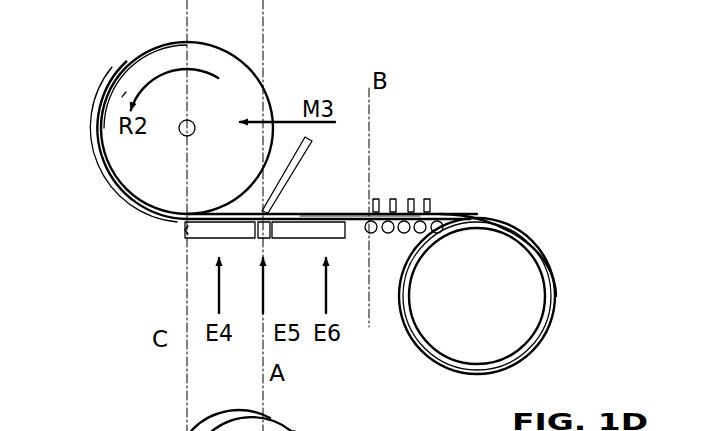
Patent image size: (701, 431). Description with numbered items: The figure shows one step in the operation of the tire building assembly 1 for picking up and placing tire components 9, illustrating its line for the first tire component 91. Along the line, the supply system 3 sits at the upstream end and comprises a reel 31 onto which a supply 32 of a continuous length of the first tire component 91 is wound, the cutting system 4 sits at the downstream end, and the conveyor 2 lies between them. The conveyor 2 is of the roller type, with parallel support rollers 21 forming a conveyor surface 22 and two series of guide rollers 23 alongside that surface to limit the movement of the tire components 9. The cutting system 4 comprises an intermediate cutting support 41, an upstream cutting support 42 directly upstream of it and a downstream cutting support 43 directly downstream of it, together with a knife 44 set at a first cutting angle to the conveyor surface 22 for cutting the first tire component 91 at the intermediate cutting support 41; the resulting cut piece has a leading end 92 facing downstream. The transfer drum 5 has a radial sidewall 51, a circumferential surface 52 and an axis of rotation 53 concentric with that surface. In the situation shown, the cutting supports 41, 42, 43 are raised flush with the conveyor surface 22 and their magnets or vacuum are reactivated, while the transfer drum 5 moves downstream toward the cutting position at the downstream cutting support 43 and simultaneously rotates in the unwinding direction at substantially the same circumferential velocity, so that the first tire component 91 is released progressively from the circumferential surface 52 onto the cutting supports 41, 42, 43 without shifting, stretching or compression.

The tire building assembly 1 is at (487, 131).
The conveyor 2 is at (391, 215).
The support rollers 21 is at (391, 234).
The conveyor surface 22 is at (386, 199).
The guide rollers 23 is at (395, 199).
The supply system 3 is at (511, 322).
The reel 31 is at (530, 315).
The supply 32 is at (525, 357).
The cutting system 4 is at (213, 269).
The intermediate cutting support 41 is at (252, 238).
The upstream cutting support 42 is at (293, 240).
The downstream cutting support 43 is at (184, 232).
The knife 44 is at (290, 180).
The transfer drum 5 is at (250, 69).
The radial sidewall 51 is at (122, 97).
The circumferential surface 52 is at (155, 48).
The axis of rotation 53 is at (180, 134).
The tire components 9 is at (338, 214).
The first tire component 91 is at (452, 211).
The leading end 92 is at (126, 58).